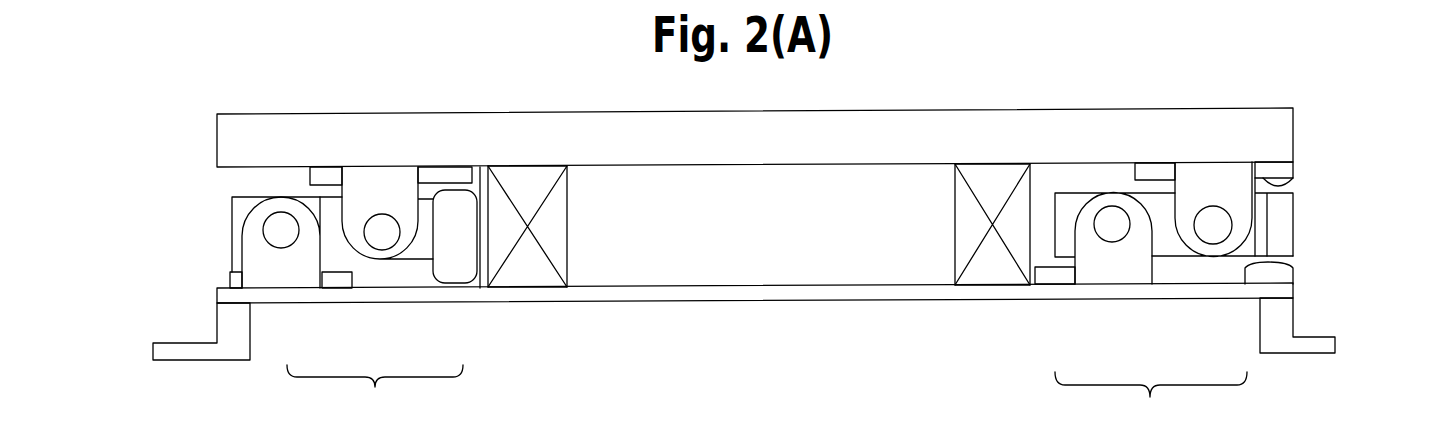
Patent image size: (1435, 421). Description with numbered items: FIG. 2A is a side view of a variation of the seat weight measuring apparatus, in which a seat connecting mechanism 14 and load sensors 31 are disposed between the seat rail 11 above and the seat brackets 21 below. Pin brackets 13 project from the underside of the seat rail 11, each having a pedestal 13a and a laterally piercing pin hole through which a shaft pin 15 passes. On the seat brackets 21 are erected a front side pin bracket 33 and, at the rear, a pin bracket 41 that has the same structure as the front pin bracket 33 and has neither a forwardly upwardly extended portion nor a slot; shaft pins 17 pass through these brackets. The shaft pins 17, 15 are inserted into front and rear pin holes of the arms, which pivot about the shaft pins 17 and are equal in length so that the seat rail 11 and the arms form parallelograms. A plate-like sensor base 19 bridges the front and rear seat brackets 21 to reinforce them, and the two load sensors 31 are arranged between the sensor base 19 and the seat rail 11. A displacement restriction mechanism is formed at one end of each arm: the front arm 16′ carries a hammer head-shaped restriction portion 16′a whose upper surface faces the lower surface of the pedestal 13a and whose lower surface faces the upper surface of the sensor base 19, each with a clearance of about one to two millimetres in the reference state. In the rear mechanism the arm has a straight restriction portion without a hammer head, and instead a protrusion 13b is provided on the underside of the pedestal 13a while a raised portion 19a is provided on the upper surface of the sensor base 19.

The seat rail 11 is at (870, 122).
The pin bracket 13 is at (355, 185).
The pedestal 13a is at (448, 173).
The protrusion 13b is at (1302, 182).
The seat connecting mechanism 14 is at (767, 393).
The shaft pin 15 is at (382, 238).
The front arm 16′ is at (333, 245).
The hammer head-shaped restriction portion 16′a is at (458, 267).
The shaft pin 17 is at (285, 235).
The sensor base 19 is at (825, 293).
The raised portion 19a is at (1282, 272).
The seat bracket 21 is at (223, 322).
The load sensor 31 is at (548, 219).
The front side pin bracket 33 is at (252, 255).
The pin bracket 41 is at (1083, 256).